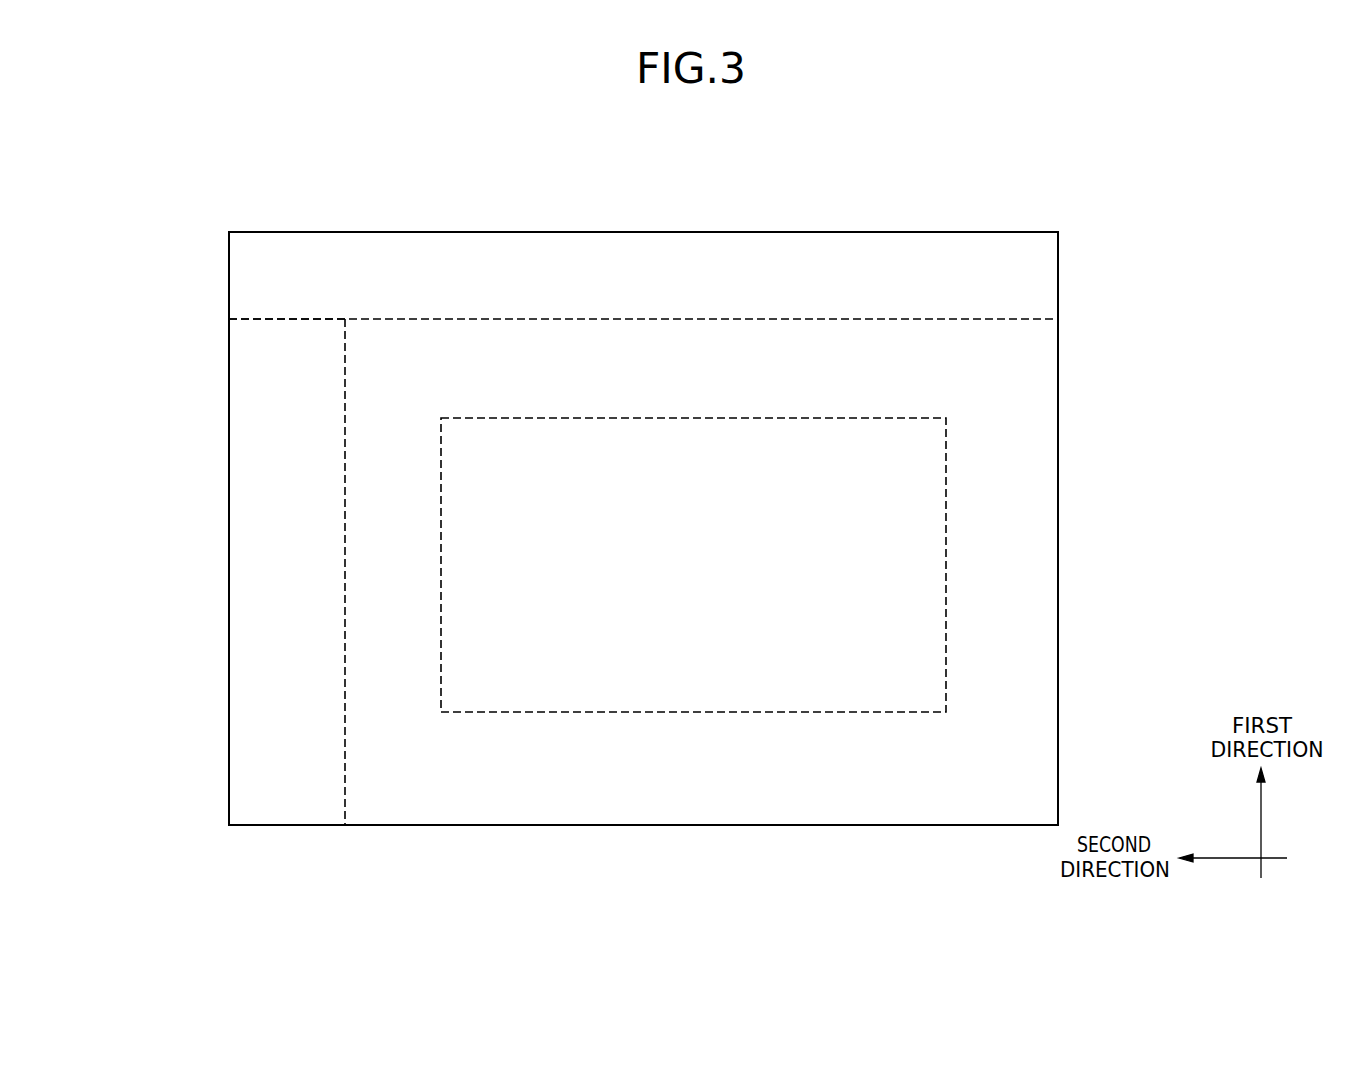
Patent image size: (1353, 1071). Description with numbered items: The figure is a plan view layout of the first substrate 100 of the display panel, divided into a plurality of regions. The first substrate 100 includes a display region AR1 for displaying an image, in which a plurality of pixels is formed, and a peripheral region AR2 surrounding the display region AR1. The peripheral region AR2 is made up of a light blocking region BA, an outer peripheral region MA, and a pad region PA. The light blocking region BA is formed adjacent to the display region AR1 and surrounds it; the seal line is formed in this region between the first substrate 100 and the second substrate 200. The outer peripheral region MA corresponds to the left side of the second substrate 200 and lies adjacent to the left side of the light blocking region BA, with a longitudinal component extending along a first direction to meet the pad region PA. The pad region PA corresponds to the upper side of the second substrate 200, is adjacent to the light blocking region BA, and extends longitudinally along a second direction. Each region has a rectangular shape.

The first substrate 100 is at (1011, 232).
The second substrate 200 is at (1013, 320).
The display region AR1 is at (481, 522).
The peripheral region AR2 is at (141, 270).
The pad region PA is at (263, 276).
The light blocking region BA is at (374, 364).
The outer peripheral region MA is at (263, 408).